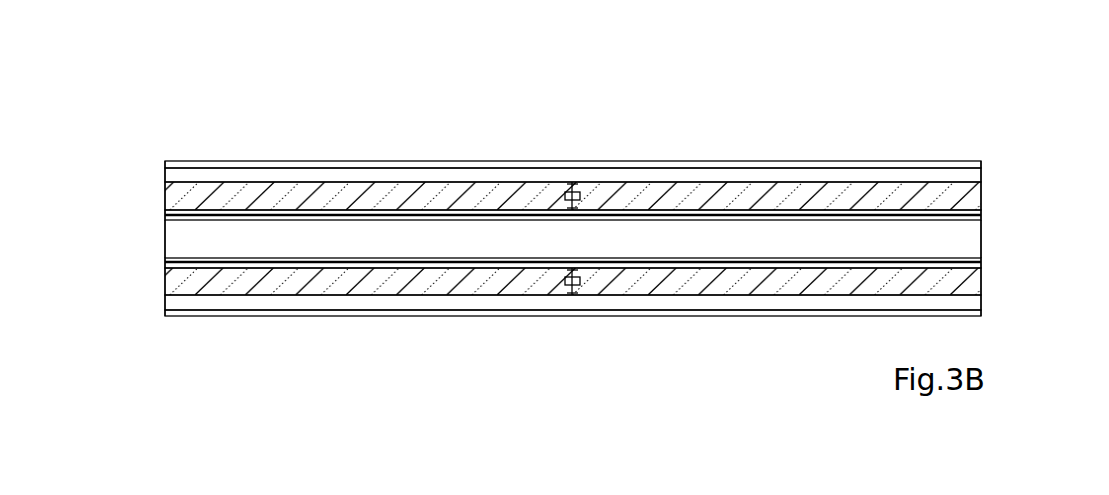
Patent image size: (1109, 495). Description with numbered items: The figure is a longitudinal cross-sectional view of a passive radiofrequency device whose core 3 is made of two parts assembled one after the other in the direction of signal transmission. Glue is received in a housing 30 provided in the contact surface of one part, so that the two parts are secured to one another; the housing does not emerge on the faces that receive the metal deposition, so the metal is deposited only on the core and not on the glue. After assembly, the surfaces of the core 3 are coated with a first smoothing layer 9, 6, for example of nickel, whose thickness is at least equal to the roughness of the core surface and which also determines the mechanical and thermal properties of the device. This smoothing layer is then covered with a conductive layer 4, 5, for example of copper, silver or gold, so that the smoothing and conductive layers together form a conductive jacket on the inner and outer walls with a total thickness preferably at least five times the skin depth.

The core 3 is at (165, 197).
The conductive layer 4 is at (165, 218).
The conductive layer 5 is at (165, 163).
The smoothing layer 6 is at (165, 173).
The smoothing layer 9 is at (165, 211).
The housing 30 is at (578, 193).